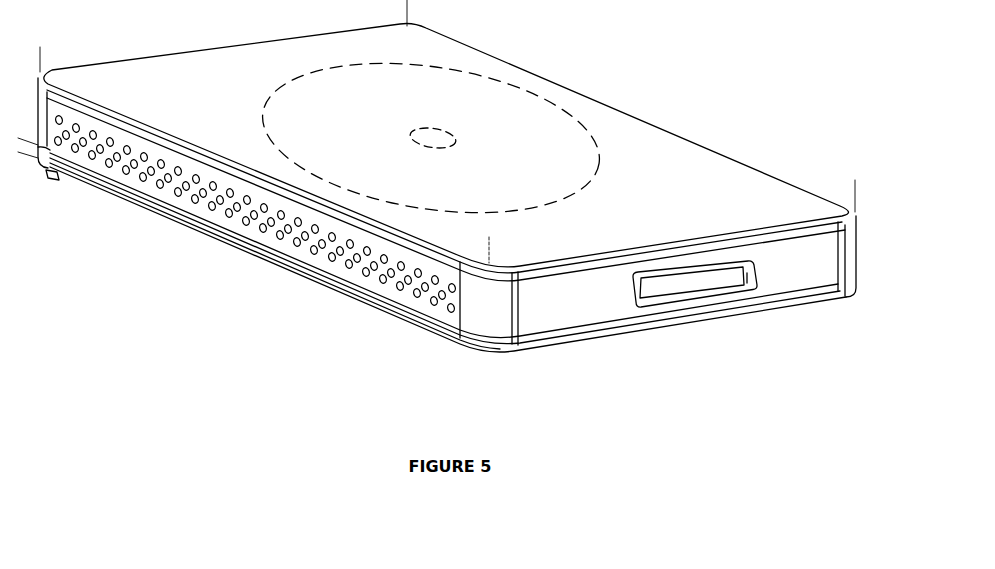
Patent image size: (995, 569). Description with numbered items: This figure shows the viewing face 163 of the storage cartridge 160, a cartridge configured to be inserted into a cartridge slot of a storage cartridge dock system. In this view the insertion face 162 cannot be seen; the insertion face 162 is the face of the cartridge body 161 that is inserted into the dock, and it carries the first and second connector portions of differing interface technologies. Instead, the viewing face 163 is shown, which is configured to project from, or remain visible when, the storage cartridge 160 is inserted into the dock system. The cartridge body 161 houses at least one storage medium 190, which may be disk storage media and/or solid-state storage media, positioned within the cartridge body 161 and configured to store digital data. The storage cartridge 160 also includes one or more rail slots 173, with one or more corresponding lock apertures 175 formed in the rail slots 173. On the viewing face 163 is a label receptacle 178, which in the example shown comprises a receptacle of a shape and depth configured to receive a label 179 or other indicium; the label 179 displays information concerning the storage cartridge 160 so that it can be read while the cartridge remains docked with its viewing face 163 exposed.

The storage cartridge 160 is at (205, 362).
The cartridge body 161 is at (207, 237).
The insertion face 162 is at (40, 52).
The viewing face 163 is at (489, 242).
The rail slot 173 is at (23, 131).
The lock aperture 175 is at (23, 160).
The label receptacle 178 is at (747, 292).
The label 179 is at (662, 283).
The storage medium 190 is at (592, 183).